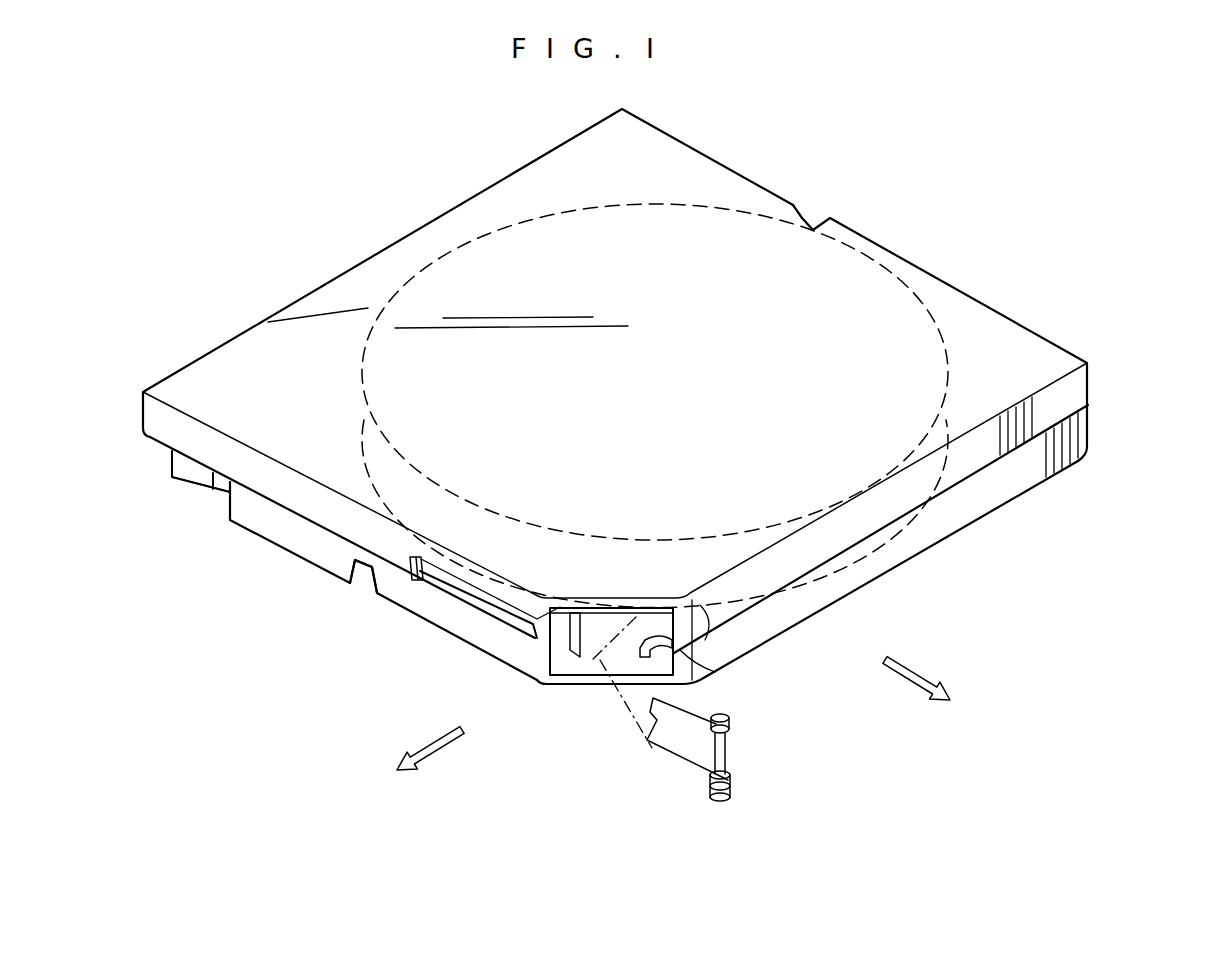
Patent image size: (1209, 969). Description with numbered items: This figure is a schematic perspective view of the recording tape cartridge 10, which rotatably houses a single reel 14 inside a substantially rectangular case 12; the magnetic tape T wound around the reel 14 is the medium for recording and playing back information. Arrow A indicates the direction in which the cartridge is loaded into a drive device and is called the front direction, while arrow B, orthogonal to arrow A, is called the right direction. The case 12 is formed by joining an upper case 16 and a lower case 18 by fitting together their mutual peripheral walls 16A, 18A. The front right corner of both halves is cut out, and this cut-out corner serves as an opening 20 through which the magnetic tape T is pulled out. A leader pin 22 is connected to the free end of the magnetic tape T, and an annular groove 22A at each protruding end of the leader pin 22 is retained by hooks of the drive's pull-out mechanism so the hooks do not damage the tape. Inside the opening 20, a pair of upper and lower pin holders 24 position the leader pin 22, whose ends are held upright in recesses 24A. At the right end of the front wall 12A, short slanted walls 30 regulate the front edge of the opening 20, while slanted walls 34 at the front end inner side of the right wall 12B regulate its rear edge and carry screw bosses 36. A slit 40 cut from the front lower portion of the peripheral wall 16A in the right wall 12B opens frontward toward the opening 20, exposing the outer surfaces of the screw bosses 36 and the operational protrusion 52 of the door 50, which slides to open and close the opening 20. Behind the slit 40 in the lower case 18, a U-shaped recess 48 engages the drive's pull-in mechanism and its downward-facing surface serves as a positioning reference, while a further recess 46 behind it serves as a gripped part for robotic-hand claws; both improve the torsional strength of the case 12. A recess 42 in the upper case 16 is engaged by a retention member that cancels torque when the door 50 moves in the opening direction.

The recording tape cartridge 10 is at (884, 210).
The case 12 is at (1160, 370).
The front wall 12A is at (1033, 530).
The right wall 12B is at (224, 558).
The reel 14 is at (697, 243).
The upper case 16 is at (1101, 390).
The peripheral wall of upper case 16A is at (338, 505).
The lower case 18 is at (1102, 429).
The peripheral wall of lower case 18A is at (332, 548).
The opening 20 is at (611, 630).
The leader pin 22 is at (735, 792).
The annular groove 22A is at (730, 733).
The pin holder 24 is at (704, 627).
The recess of pin holder 24A is at (650, 635).
The slanted wall 30 is at (698, 655).
The slanted wall 34 is at (533, 628).
The screw boss 36 is at (583, 660).
The slit 40 is at (475, 600).
The recess 42 is at (801, 212).
The recess 46 is at (216, 490).
The recess 48 is at (366, 586).
The door 50 is at (455, 580).
The operational protrusion 52 is at (432, 572).
The magnetic tape T is at (684, 738).
The arrow A is at (929, 681).
The arrow B is at (419, 754).